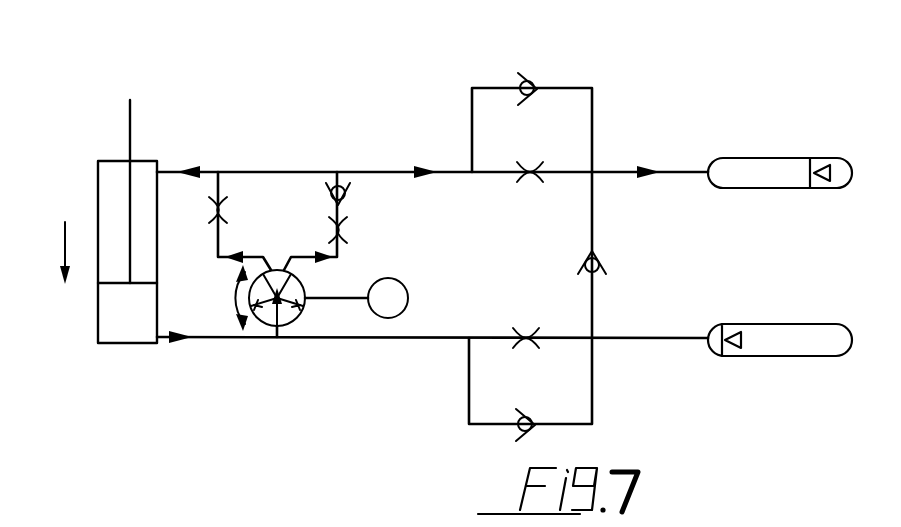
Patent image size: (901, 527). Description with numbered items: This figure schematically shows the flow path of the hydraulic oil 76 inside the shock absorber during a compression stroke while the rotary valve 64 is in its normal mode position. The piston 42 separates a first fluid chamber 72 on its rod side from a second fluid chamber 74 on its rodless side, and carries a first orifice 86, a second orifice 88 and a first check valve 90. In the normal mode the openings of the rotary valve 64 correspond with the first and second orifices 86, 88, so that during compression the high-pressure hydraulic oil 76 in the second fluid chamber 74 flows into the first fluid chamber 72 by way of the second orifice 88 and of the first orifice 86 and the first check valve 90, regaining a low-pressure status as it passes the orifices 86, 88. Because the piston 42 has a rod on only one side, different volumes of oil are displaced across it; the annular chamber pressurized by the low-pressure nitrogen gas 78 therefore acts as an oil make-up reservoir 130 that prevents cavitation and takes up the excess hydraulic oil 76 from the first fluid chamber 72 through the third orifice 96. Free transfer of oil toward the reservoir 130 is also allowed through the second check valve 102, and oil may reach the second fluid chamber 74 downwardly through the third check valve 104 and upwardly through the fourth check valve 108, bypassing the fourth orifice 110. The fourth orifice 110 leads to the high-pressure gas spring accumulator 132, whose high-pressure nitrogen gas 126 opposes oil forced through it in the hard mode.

The piston 42 is at (97, 275).
The rotary valve 64 is at (303, 312).
The first fluid chamber 72 is at (108, 168).
The second fluid chamber 74 is at (97, 335).
The hydraulic oil 76 is at (145, 165).
The low-pressure nitrogen gas 78 is at (838, 178).
The first orifice 86 is at (346, 230).
The second orifice 88 is at (226, 210).
The first check valve 90 is at (328, 199).
The third orifice 96 is at (530, 170).
The second check valve 102 is at (538, 85).
The third check valve 104 is at (600, 262).
The fourth check valve 108 is at (522, 430).
The fourth orifice 110 is at (526, 342).
The high-pressure nitrogen gas 126 is at (828, 350).
The oil make-up reservoir 130 is at (780, 160).
The high-pressure gas spring accumulator 132 is at (778, 322).